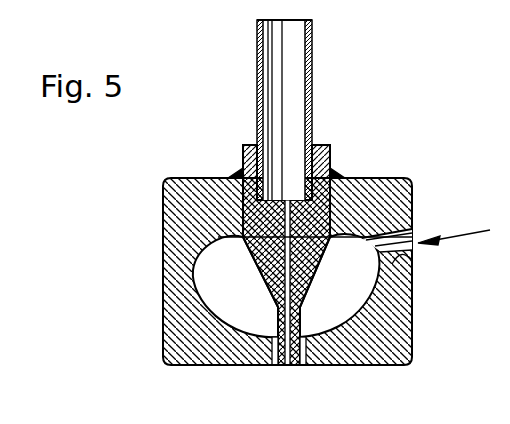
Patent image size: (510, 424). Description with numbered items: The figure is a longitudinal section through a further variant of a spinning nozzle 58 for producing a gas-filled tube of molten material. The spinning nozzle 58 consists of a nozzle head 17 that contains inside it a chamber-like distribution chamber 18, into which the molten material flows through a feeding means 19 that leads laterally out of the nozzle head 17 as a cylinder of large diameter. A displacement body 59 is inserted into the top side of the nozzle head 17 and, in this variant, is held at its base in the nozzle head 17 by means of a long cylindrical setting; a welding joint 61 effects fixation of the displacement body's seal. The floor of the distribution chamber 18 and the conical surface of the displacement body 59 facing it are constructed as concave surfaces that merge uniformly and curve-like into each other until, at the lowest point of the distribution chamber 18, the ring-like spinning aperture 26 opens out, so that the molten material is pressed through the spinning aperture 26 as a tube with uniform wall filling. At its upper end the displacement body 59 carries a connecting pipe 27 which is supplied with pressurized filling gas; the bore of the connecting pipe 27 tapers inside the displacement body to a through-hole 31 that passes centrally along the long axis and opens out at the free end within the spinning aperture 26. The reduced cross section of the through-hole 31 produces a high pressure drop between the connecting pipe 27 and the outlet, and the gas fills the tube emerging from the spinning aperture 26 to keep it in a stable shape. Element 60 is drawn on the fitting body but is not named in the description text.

The nozzle head 17 is at (186, 366).
The distribution chamber 18 is at (238, 286).
The feeding means 19 is at (400, 252).
The spinning aperture 26 is at (300, 366).
The connecting pipe 27 is at (313, 71).
The through-hole 31 is at (288, 366).
The spinning nozzle 58 is at (163, 350).
The displacement body 59 is at (310, 262).
The fitting body 60 is at (333, 203).
The welding joint 61 is at (337, 169).